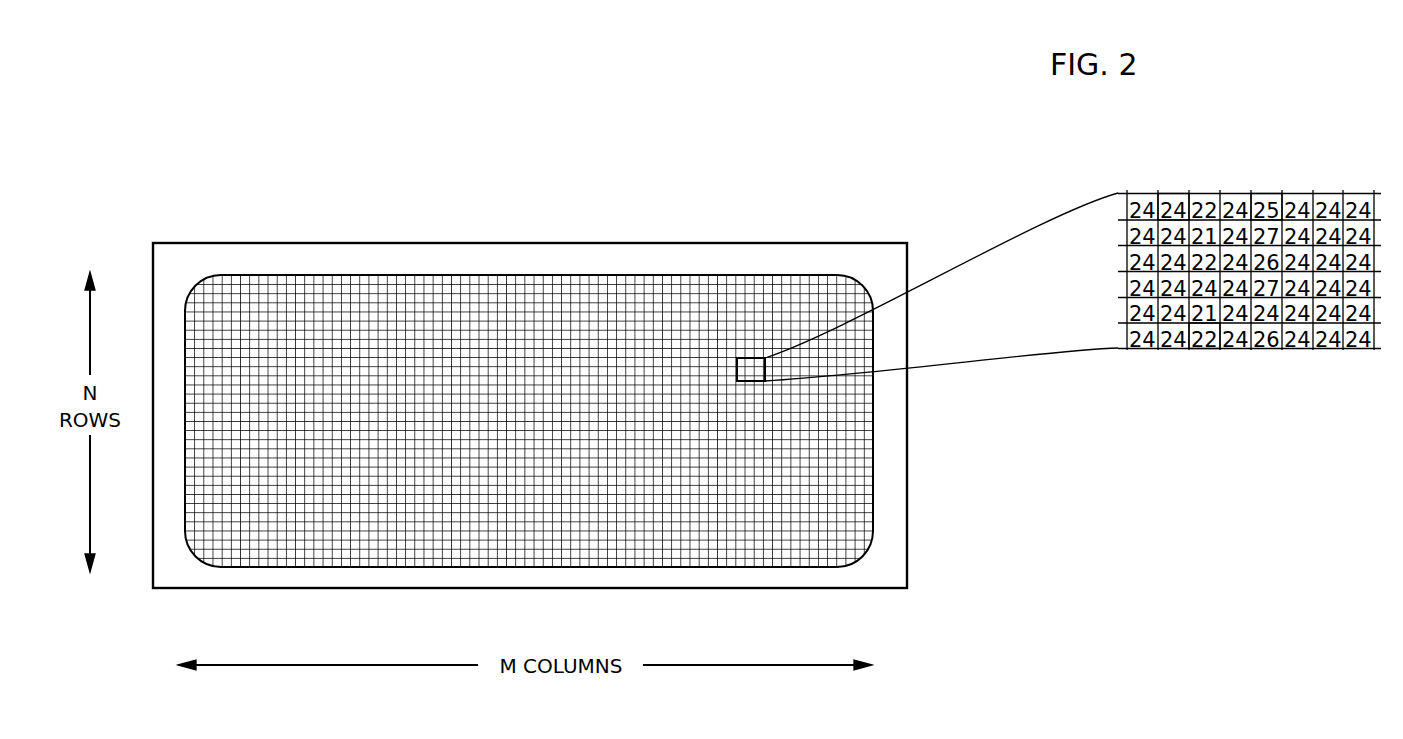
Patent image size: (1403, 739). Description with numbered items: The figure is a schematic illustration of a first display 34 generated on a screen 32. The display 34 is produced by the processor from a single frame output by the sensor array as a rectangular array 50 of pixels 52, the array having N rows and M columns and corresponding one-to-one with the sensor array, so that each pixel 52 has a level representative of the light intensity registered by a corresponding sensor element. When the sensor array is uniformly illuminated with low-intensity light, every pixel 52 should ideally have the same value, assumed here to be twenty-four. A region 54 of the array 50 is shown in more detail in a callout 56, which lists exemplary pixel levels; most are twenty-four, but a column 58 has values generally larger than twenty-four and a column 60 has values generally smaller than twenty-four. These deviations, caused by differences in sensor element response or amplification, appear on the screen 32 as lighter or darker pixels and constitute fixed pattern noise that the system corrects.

The screen 32 is at (907, 519).
The first display 34 is at (329, 170).
The rectangular array of pixels 50 is at (524, 275).
The pixels 52 is at (660, 300).
The region 54 is at (754, 357).
The callout 56 is at (1172, 195).
The column 58 is at (1267, 195).
The column 60 is at (1212, 348).